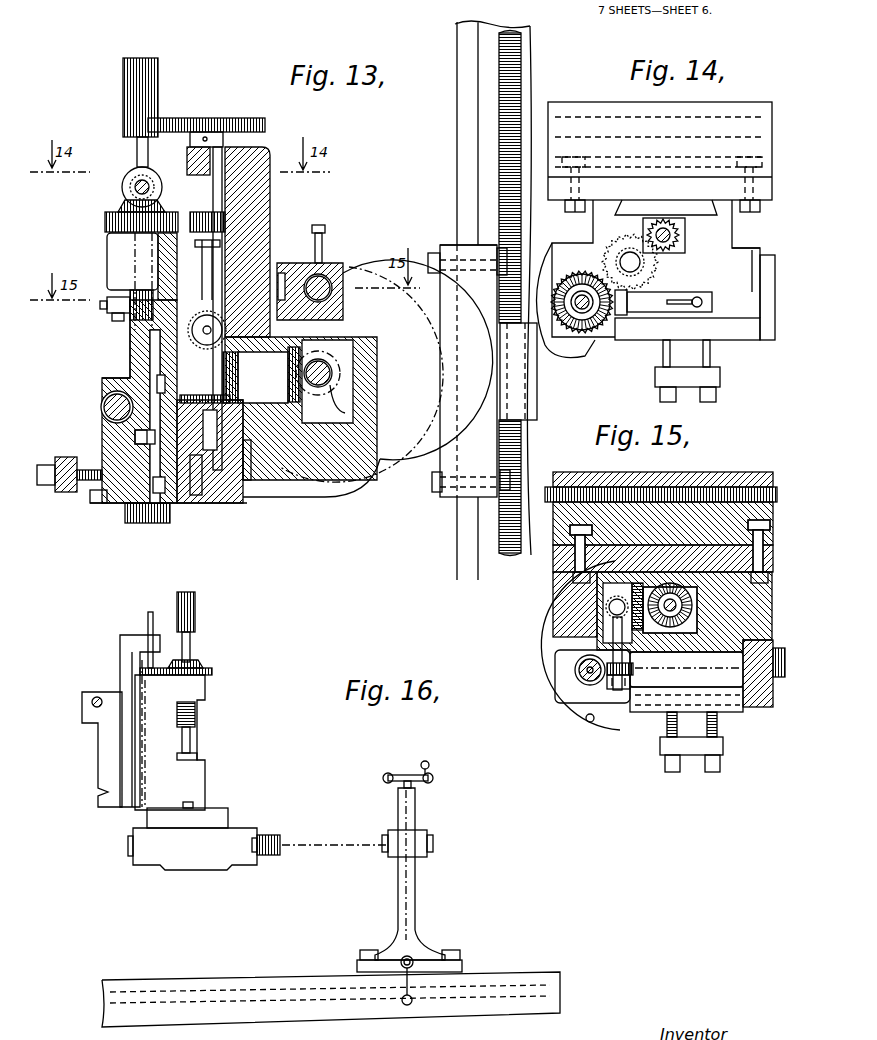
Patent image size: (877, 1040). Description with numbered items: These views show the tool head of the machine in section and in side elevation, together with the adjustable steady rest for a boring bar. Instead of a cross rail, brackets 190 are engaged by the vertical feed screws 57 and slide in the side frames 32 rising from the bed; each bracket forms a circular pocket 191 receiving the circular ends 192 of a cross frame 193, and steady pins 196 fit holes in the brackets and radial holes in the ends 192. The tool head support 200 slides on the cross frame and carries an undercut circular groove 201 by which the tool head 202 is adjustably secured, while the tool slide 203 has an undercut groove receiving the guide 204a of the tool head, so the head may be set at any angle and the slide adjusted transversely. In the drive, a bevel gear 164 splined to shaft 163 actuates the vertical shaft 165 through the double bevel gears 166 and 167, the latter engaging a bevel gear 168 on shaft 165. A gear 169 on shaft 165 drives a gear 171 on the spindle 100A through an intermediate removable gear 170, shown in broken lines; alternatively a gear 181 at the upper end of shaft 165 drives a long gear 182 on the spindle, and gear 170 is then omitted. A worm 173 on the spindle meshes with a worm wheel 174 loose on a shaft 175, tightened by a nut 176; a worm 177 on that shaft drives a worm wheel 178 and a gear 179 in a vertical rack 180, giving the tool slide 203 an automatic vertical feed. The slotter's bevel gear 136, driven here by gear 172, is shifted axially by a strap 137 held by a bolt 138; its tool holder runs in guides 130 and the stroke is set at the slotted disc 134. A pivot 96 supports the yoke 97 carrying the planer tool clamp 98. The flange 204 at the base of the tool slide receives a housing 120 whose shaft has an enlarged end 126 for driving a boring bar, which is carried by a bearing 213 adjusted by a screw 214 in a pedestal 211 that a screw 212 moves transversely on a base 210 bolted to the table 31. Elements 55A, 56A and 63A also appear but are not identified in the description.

In FIG. 16, the table 31 is at (233, 985).
In FIG. 13, the side frames 32 is at (463, 142).
In FIG. 13, the rack bar 55A is at (330, 275).
In FIG. 15, the rack bar 55A is at (707, 492).
In FIG. 16, the rack bar 55A is at (93, 705).
In FIG. 13, the slide 56A is at (448, 248).
In FIG. 13, the vertical feed screws 57 is at (523, 87).
In FIG. 14, the body 63A is at (712, 240).
In FIG. 13, the pivot 96 is at (110, 410).
In FIG. 13, the yoke 97 is at (117, 500).
In FIG. 14, the yoke 97 is at (712, 333).
In FIG. 13, the planer tool clamp 98 is at (67, 490).
In FIG. 14, the planer tool clamp 98 is at (690, 378).
In FIG. 15, the planer tool clamp 98 is at (700, 748).
In FIG. 13, the spindle 100A is at (138, 150).
In FIG. 14, the spindle 100A is at (615, 332).
In FIG. 15, the spindle 100A is at (587, 685).
In FIG. 16, the spindle 100A is at (193, 737).
In FIG. 16, the housing 120 is at (170, 863).
In FIG. 16, the enlarged end 126 is at (273, 835).
In FIG. 15, the guides 130 is at (750, 693).
In FIG. 14, the disc 134 is at (768, 333).
In FIG. 13, the bevel gear 136 is at (137, 180).
In FIG. 14, the bevel gear 136 is at (595, 295).
In FIG. 14, the strap 137 is at (712, 302).
In FIG. 15, the strap 137 is at (777, 677).
In FIG. 14, the bolt 138 is at (697, 297).
In FIG. 13, the shaft 163 is at (345, 413).
In FIG. 13, the bevel gear 164 is at (342, 358).
In FIG. 13, the vertical shaft 165 is at (213, 195).
In FIG. 14, the vertical shaft 165 is at (673, 232).
In FIG. 15, the vertical shaft 165 is at (677, 603).
In FIG. 16, the vertical shaft 165 is at (148, 620).
In FIG. 13, the double bevel gear 166 is at (297, 392).
In FIG. 13, the double bevel gear 167 is at (243, 362).
In FIG. 13, the bevel gear 168 is at (243, 385).
In FIG. 15, the bevel gear 168 is at (690, 620).
In FIG. 13, the gear 169 is at (262, 200).
In FIG. 14, the gear 169 is at (682, 250).
In FIG. 13, the intermediate removable gear 170 is at (205, 212).
In FIG. 14, the intermediate removable gear 170 is at (620, 242).
In FIG. 13, the gear 171 is at (105, 222).
In FIG. 14, the gear 171 is at (583, 262).
In FIG. 13, the gear 172 is at (118, 210).
In FIG. 14, the gear 172 is at (585, 332).
In FIG. 13, the worm 173 is at (122, 297).
In FIG. 15, the worm 173 is at (575, 667).
In FIG. 13, the worm wheel 174 is at (135, 323).
In FIG. 15, the worm wheel 174 is at (637, 675).
In FIG. 13, the shaft 175 is at (160, 275).
In FIG. 15, the shaft 175 is at (613, 637).
In FIG. 13, the nut 176 is at (120, 312).
In FIG. 15, the nut 176 is at (615, 685).
In FIG. 13, the worm 177 is at (198, 270).
In FIG. 15, the worm 177 is at (630, 600).
In FIG. 13, the worm wheel 178 is at (201, 338).
In FIG. 15, the worm wheel 178 is at (607, 610).
In FIG. 13, the gear 179 is at (130, 362).
In FIG. 15, the gear 179 is at (650, 637).
In FIG. 13, the vertical rack 180 is at (258, 225).
In FIG. 15, the vertical rack 180 is at (570, 567).
In FIG. 13, the gear 181 is at (176, 118).
In FIG. 13, the gear 182 is at (153, 84).
In FIG. 16, the gear 182 is at (196, 612).
In FIG. 13, the brackets 190 is at (422, 495).
In FIG. 13, the circular pocket 191 is at (383, 465).
In FIG. 13, the circular ends 192 is at (395, 300).
In FIG. 13, the cross frame 193 is at (340, 320).
In FIG. 13, the steady pins 196 is at (328, 232).
In FIG. 13, the tool head support 200 is at (298, 262).
In FIG. 14, the tool head support 200 is at (677, 112).
In FIG. 15, the tool head support 200 is at (602, 472).
In FIG. 16, the tool head support 200 is at (108, 693).
In FIG. 13, the undercut circular groove 201 is at (280, 475).
In FIG. 14, the undercut circular groove 201 is at (590, 167).
In FIG. 13, the tool head 202 is at (257, 480).
In FIG. 16, the tool head 202 is at (125, 652).
In FIG. 13, the tool slide 203 is at (215, 498).
In FIG. 14, the tool slide 203 is at (752, 262).
In FIG. 15, the tool slide 203 is at (555, 628).
In FIG. 16, the tool slide 203 is at (205, 683).
In FIG. 13, the flange 204 is at (95, 503).
In FIG. 15, the flange 204 is at (548, 698).
In FIG. 16, the flange 204 is at (217, 807).
In FIG. 14, the guide 204a is at (613, 213).
In FIG. 16, the base 210 is at (433, 957).
In FIG. 16, the pedestal 211 is at (410, 890).
In FIG. 16, the screw 212 is at (412, 960).
In FIG. 16, the bearing 213 is at (392, 857).
In FIG. 16, the screw 214 is at (398, 785).